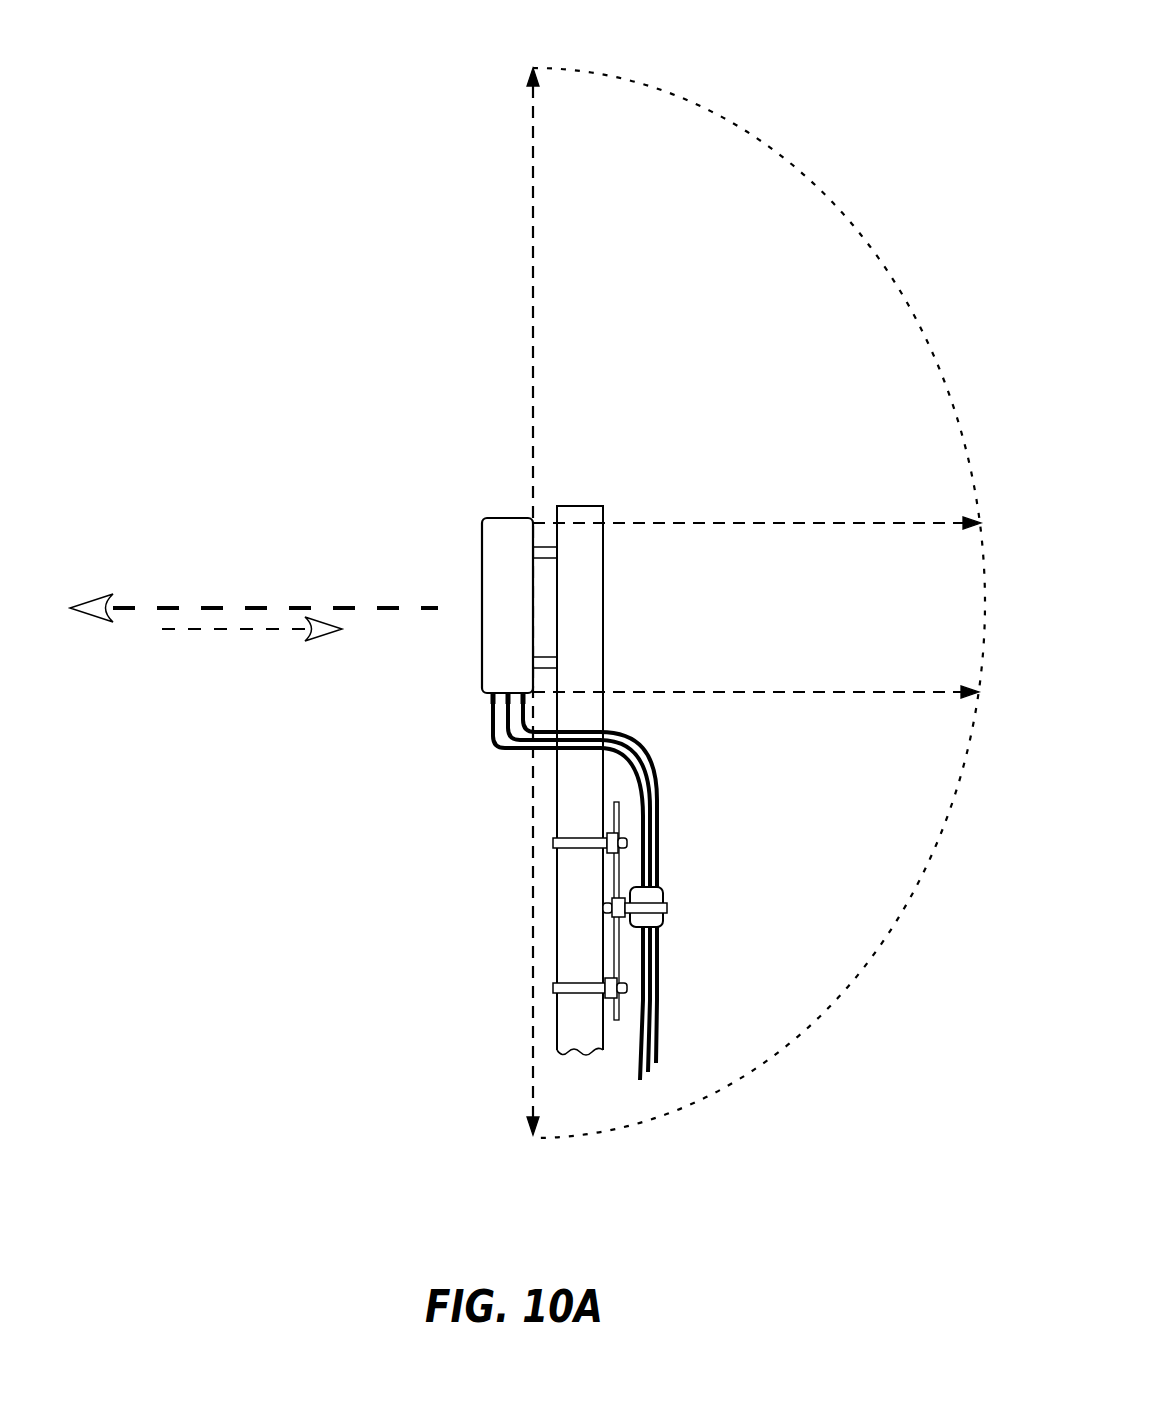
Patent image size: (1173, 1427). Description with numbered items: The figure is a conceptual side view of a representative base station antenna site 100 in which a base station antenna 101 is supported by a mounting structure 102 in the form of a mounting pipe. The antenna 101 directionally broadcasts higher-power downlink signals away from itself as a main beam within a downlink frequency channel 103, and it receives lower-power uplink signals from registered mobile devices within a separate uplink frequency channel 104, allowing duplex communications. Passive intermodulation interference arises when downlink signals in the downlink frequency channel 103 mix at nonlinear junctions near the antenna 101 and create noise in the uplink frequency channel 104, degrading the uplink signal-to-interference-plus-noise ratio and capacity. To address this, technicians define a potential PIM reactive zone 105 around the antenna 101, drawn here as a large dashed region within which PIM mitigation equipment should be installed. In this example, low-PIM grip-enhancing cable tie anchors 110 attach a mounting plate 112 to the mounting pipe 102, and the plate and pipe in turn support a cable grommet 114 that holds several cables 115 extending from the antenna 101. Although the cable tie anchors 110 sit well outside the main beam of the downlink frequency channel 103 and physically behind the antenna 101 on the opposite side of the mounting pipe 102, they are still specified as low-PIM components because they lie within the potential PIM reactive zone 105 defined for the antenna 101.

The base station antenna site 100 is at (882, 127).
The base station antenna 101 is at (509, 530).
The mounting structure 102 is at (586, 633).
The downlink frequency channel 103 is at (254, 578).
The uplink frequency channel 104 is at (255, 649).
The potential PIM reactive zone 105 is at (737, 1085).
The grip-enhancing cable tie anchors 110 is at (532, 852).
The mounting plate 112 is at (613, 1012).
The cable grommet 114 is at (667, 922).
The cables 115 is at (698, 782).